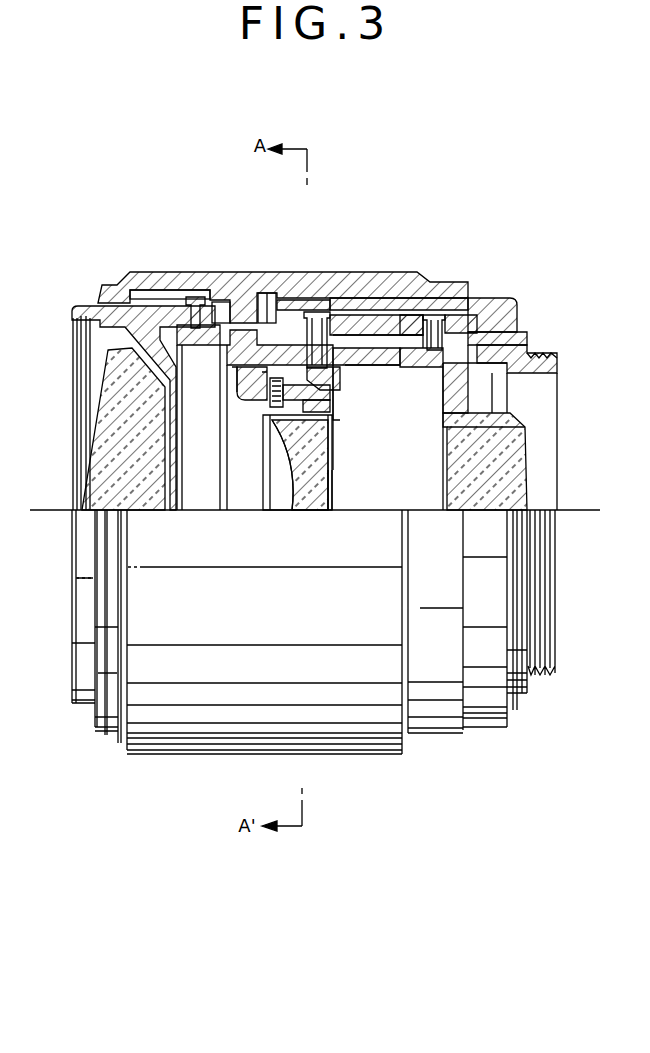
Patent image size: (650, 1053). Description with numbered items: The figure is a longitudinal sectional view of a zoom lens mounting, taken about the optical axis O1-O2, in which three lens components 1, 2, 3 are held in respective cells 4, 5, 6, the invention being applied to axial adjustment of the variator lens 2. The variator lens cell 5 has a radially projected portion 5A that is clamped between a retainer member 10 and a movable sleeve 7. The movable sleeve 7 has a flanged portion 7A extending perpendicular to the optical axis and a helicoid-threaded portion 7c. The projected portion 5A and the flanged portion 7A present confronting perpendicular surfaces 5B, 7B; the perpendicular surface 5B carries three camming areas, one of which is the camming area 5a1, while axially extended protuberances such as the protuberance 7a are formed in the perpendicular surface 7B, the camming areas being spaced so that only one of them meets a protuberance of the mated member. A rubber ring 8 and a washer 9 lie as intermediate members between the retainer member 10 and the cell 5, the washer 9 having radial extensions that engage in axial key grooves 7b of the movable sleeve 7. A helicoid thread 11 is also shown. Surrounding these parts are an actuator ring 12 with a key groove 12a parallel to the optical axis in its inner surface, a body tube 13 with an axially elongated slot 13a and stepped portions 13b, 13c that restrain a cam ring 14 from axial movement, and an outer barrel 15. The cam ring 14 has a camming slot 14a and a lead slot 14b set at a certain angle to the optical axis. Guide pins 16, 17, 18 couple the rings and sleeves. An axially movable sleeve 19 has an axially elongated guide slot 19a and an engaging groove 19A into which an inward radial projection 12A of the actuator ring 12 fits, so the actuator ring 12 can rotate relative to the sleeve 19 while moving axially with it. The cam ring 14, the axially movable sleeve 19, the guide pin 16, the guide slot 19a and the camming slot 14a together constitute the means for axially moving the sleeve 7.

The lens component 1 is at (146, 513).
The variator lens 2 is at (277, 513).
The lens component 3 is at (453, 515).
The cell 4 is at (93, 303).
The variator lens cell 5 is at (330, 423).
The projected portion 5A is at (290, 465).
The camming area 5a1 is at (312, 450).
The perpendicular surface 5B is at (333, 473).
The cell 6 is at (510, 413).
The movable sleeve 7 is at (332, 377).
The protuberance 7a is at (332, 400).
The flanged portion 7A is at (335, 405).
The perpendicular surface 7B is at (335, 433).
The axial key groove 7b is at (237, 375).
The helicoid-threaded portion 7c is at (240, 380).
The rubber ring 8 is at (273, 420).
The washer 9 is at (265, 410).
The retainer member 10 is at (268, 395).
The helicoid thread 11 is at (147, 333).
The actuator ring 12 is at (210, 285).
The key groove 12a is at (152, 294).
The inward radial projection 12A is at (240, 317).
The body tube 13 is at (528, 340).
The axially elongated slot 13a is at (380, 307).
The stepped portion 13b is at (287, 307).
The stepped portion 13c is at (483, 327).
The cam ring 14 is at (475, 320).
The camming slot 14a is at (347, 333).
The lead slot 14b is at (443, 327).
The outer barrel 15 is at (497, 298).
The guide pin 16 is at (320, 315).
The guide pin 17 is at (428, 318).
The guide pin 18 is at (194, 297).
The axially movable sleeve 19 is at (403, 367).
The guide slot 19a is at (353, 360).
The engaging groove 19A is at (267, 327).
The optical axis O1 is at (52, 506).
The optical axis O2 is at (579, 507).